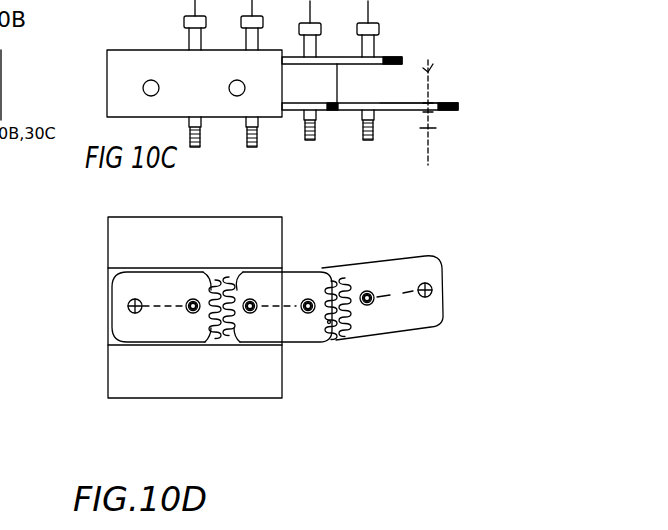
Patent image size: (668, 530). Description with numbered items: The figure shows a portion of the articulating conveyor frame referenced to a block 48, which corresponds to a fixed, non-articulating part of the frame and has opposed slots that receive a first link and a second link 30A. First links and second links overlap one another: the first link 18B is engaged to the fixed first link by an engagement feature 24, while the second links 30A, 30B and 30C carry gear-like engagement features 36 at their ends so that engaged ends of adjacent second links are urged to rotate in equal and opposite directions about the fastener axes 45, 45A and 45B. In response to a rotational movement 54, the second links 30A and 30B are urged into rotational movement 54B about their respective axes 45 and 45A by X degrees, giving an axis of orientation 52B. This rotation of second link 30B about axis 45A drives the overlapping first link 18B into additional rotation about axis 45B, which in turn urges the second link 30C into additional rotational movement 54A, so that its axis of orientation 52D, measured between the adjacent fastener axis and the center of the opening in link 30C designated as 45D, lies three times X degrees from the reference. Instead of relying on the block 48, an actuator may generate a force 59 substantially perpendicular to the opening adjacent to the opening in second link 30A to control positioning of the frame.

In FIG. 10C, the block 48 is at (122, 50).
In FIG. 10D, the block 48 is at (108, 232).
In FIG. 10C, the first link 18B is at (326, 54).
In FIG. 10C, the engagement feature 24 is at (283, 56).
In FIG. 10C, the engagement feature 36 is at (333, 112).
In FIG. 10D, the engagement feature 36 is at (217, 288).
In FIG. 10C, the second link 30B is at (292, 112).
In FIG. 10D, the second link 30B is at (273, 345).
In FIG. 10C, the second link 30C is at (410, 112).
In FIG. 10D, the second link 30C is at (386, 330).
In FIG. 10C, the axis 45D is at (435, 67).
In FIG. 10D, the axis 45D is at (430, 283).
In FIG. 10D, the second link 30A is at (160, 344).
In FIG. 10D, the force 59 is at (140, 332).
In FIG. 10D, the axis 45 is at (192, 312).
In FIG. 10D, the rotational movement 54B is at (211, 313).
In FIG. 10D, the axis 45A is at (255, 312).
In FIG. 10D, the axis of orientation 52B is at (310, 314).
In FIG. 10D, the axis 45B is at (330, 324).
In FIG. 10D, the rotational movement 54A is at (309, 319).
In FIG. 10D, the axis of orientation 52D is at (392, 293).
In FIG. 10D, the rotational movement 54 is at (555, 238).